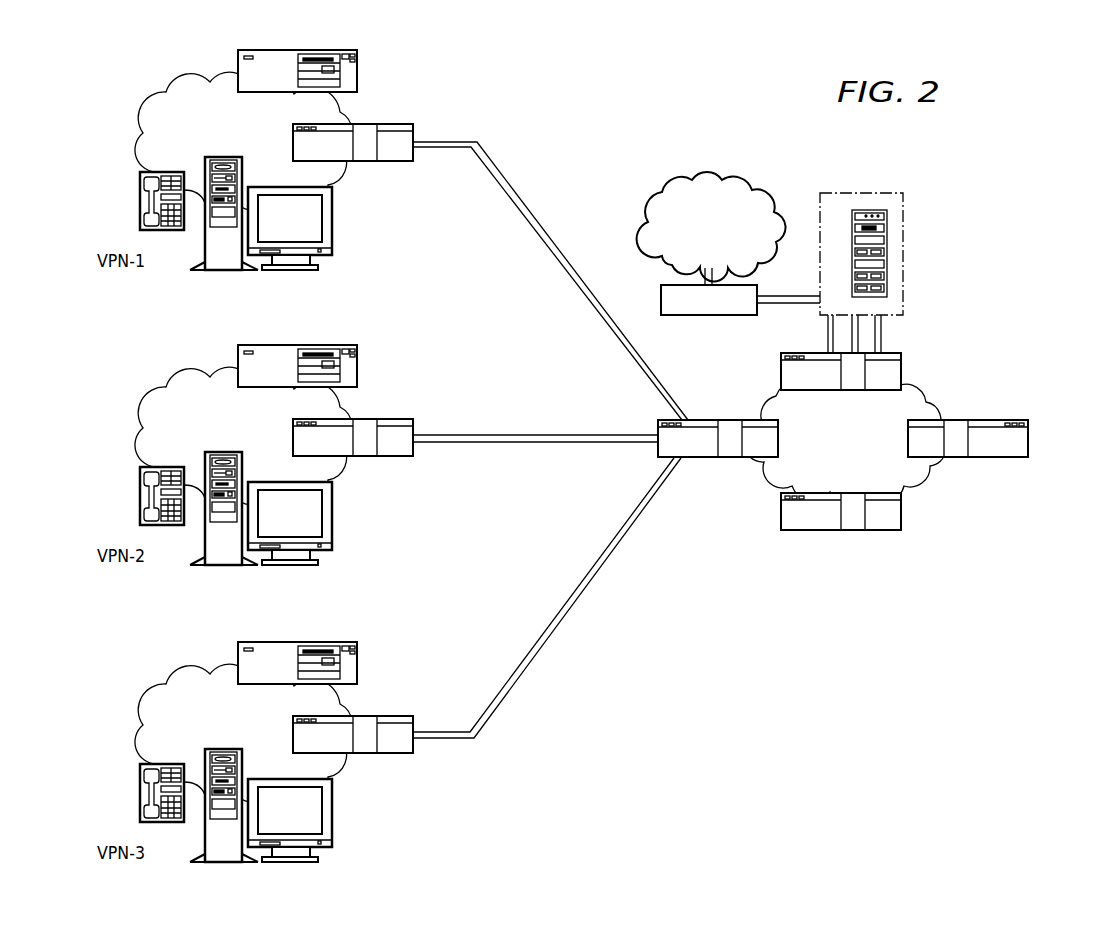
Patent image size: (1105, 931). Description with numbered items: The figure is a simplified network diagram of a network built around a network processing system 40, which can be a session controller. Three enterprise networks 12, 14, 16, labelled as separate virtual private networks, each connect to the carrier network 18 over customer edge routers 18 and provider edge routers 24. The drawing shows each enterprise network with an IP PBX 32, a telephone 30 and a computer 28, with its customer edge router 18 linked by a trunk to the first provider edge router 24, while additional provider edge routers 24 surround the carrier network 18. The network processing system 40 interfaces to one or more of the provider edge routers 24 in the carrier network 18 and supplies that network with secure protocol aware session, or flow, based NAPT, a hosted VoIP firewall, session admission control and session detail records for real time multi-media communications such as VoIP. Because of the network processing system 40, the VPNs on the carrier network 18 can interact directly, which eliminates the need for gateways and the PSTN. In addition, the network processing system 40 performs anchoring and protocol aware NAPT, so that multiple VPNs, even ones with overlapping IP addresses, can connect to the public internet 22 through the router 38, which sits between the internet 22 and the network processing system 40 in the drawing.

The enterprise network 12 is at (172, 682).
The enterprise network 14 is at (172, 385).
The enterprise network 16 is at (172, 90).
The carrier network 18 is at (413, 158).
The public internet 22 is at (660, 181).
The provider edge router 24 is at (730, 458).
The computer 28 is at (332, 222).
The IP telephone 30 is at (140, 178).
The IP PBX 32 is at (357, 66).
The router 38 is at (661, 293).
The network processing system 40 is at (903, 226).